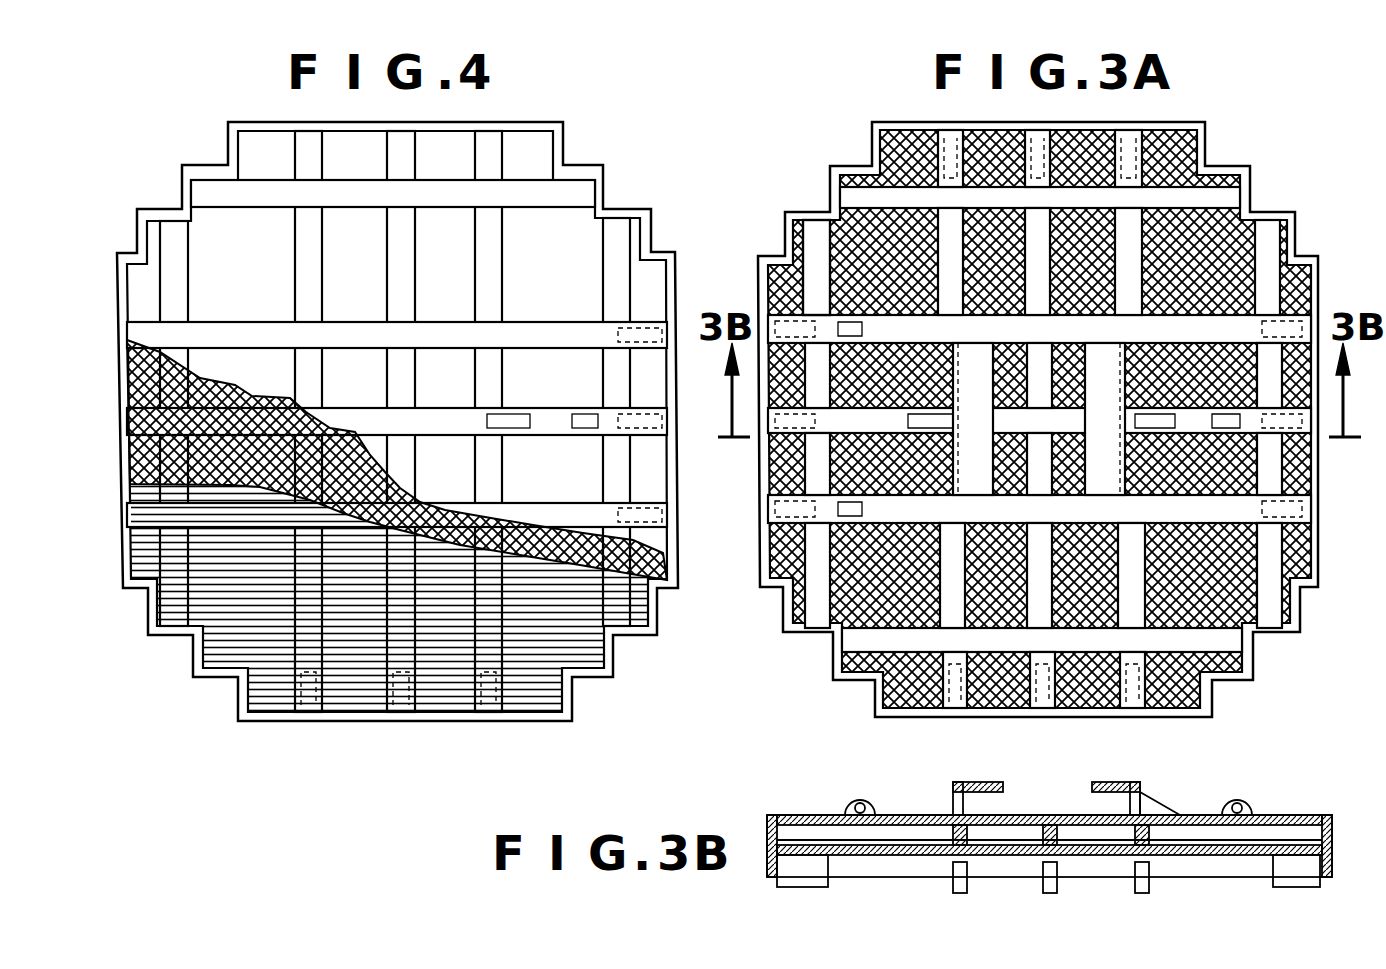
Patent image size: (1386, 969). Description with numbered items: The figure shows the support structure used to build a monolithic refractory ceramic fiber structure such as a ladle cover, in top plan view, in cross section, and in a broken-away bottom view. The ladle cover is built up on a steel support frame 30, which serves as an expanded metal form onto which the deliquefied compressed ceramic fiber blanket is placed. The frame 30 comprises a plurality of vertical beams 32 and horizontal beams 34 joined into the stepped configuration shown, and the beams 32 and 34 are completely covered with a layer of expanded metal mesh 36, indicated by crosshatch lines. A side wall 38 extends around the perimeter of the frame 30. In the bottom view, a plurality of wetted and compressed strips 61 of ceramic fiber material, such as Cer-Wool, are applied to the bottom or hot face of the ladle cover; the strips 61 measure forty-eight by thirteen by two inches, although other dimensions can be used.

In FIG. 3A, the steel support frame 30 is at (1225, 128).
In FIG. 4, the vertical beams 32 is at (482, 130).
In FIG. 3A, the vertical beams 32 is at (1265, 267).
In FIG. 3B, the vertical beams 32 is at (790, 830).
In FIG. 4, the horizontal beams 34 is at (542, 333).
In FIG. 3A, the horizontal beams 34 is at (880, 500).
In FIG. 3B, the horizontal beams 34 is at (925, 822).
In FIG. 4, the expanded metal mesh 36 is at (207, 380).
In FIG. 3A, the expanded metal mesh 36 is at (1235, 222).
In FIG. 3B, the expanded metal mesh 36 is at (1196, 855).
In FIG. 3A, the side wall 38 is at (810, 207).
In FIG. 3B, the side wall 38 is at (887, 818).
In FIG. 4, the strips 61 is at (635, 622).